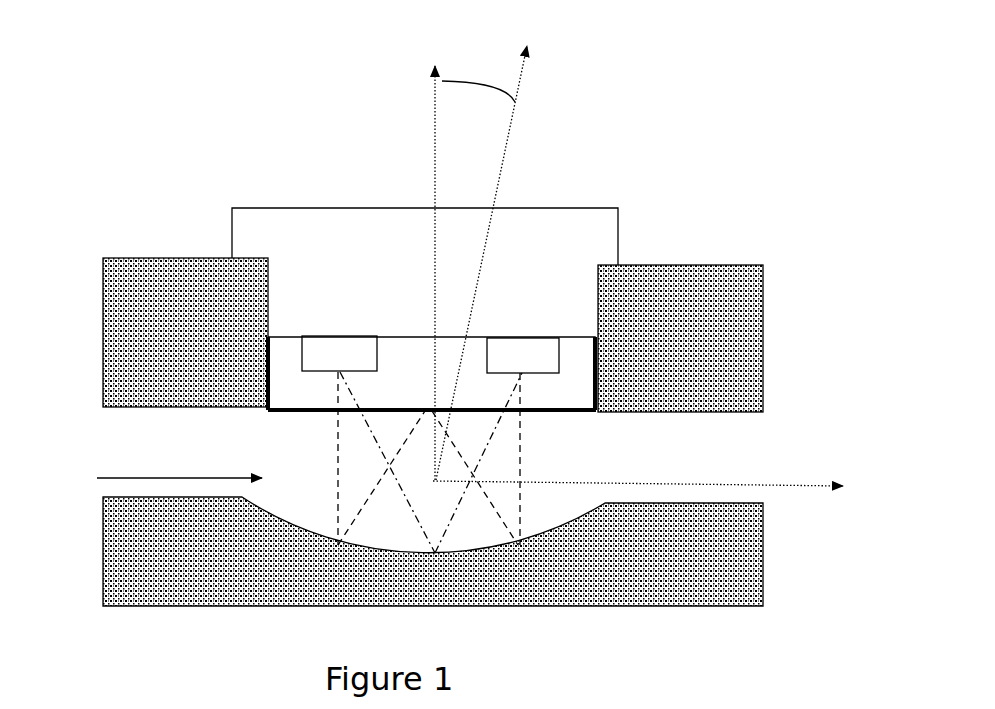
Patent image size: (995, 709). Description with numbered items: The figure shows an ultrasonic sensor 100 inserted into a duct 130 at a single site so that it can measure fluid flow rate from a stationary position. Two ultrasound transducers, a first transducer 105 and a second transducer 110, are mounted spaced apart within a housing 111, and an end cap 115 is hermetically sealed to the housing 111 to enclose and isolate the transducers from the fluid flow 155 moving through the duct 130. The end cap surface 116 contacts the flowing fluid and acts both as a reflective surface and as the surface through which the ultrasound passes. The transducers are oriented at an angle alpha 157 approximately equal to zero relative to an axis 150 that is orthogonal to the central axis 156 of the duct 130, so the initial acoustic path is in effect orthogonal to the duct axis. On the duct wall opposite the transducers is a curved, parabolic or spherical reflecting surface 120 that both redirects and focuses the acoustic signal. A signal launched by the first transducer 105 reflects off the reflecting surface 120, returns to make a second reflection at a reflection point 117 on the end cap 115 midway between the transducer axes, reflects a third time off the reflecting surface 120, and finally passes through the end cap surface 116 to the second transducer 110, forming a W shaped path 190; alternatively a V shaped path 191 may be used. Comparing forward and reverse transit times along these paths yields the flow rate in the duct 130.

The ultrasonic sensor 100 is at (357, 168).
The first transducer 105 is at (339, 440).
The second transducer 110 is at (523, 355).
The housing 111 is at (541, 206).
The end cap 115 is at (266, 345).
The end cap surface 116 is at (565, 413).
The reflection point 117 is at (416, 413).
The curved reflecting surface 120 is at (285, 534).
The duct 130 is at (732, 535).
The axis 150 is at (431, 258).
The fluid flow 155 is at (142, 484).
The central axis 156 is at (661, 476).
The angle alpha 157 is at (481, 249).
The W shaped path 190 is at (524, 518).
The V shaped path 191 is at (462, 521).